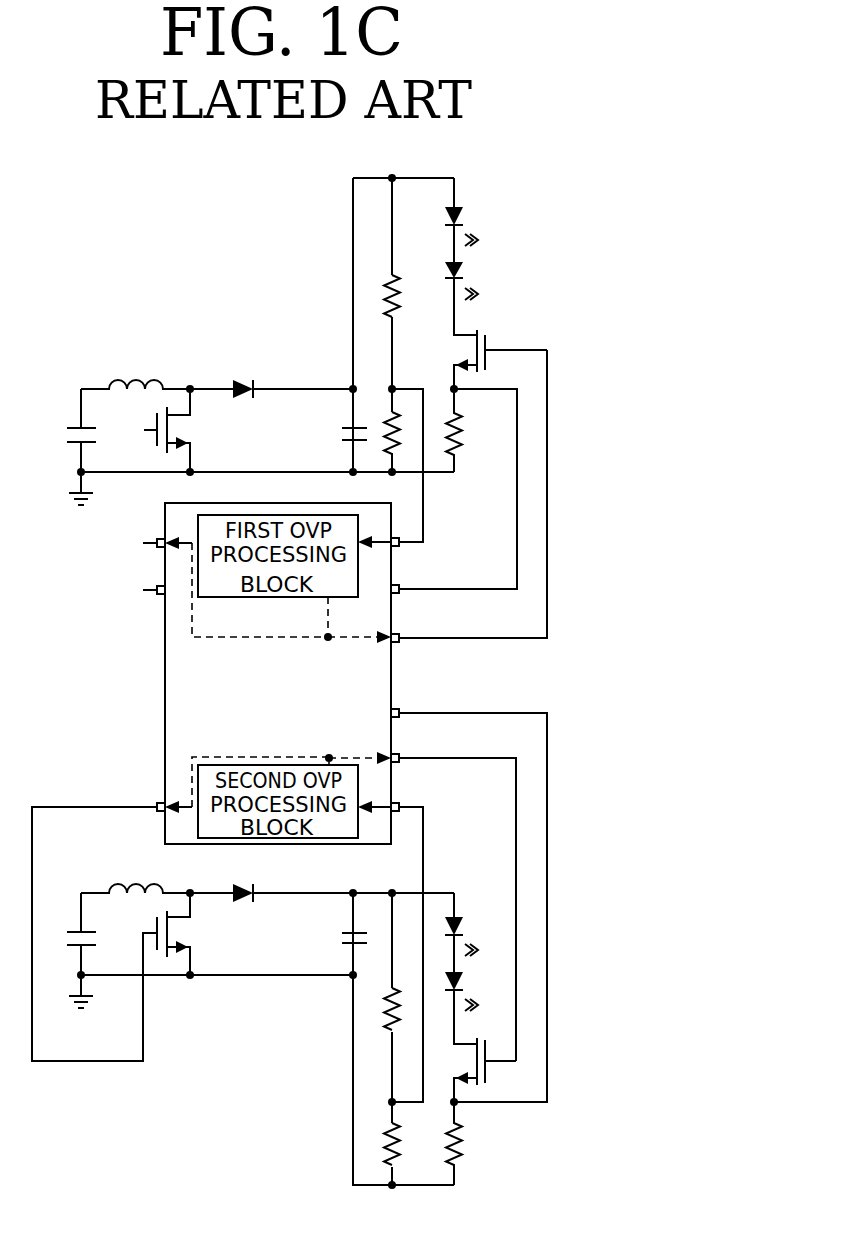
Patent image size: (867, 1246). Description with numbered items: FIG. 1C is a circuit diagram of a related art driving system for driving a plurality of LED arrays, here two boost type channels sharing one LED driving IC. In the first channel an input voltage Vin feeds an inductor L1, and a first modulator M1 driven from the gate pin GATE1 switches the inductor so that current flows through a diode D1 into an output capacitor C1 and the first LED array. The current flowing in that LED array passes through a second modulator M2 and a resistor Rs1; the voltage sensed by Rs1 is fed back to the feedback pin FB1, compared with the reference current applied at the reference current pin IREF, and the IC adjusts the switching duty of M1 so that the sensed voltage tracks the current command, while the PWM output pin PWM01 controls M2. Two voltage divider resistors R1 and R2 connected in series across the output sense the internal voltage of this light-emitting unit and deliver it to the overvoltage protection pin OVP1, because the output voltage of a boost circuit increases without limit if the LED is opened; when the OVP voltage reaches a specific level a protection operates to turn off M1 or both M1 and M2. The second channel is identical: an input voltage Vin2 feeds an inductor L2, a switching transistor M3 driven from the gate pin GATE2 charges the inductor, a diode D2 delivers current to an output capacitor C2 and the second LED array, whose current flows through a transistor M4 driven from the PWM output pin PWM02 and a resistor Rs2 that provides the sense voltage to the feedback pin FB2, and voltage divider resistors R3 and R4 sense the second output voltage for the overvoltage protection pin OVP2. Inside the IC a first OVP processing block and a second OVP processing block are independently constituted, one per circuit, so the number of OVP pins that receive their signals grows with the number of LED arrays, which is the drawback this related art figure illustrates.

The input voltage Vin is at (64, 447).
The inductor L1 is at (135, 369).
The diode D1 is at (271, 374).
The first modulator M1 is at (183, 430).
The output capacitor C1 is at (342, 434).
The voltage divider resistor R1 is at (408, 296).
The voltage divider resistor R2 is at (402, 441).
The resistor Rs1 is at (474, 430).
The second modulator M2 is at (500, 356).
The gate pin GATE1 is at (123, 558).
The reference current pin IREF is at (123, 592).
The overvoltage protection pin OVP1 is at (428, 555).
The feedback pin FB1 is at (419, 604).
The PWM output pin PWM01 is at (440, 654).
The feedback pin FB2 is at (421, 699).
The PWM output pin PWM02 is at (441, 744).
The overvoltage protection pin OVP2 is at (430, 794).
The gate pin GATE2 is at (94, 934).
The input voltage Vin2 is at (68, 950).
The inductor L2 is at (135, 872).
The diode D2 is at (271, 876).
The modulator M3 is at (184, 934).
The output capacitor C2 is at (341, 939).
The voltage divider resistor R3 is at (378, 1009).
The voltage divider resistor R4 is at (378, 1144).
The resistor Rs2 is at (474, 1143).
The modulator M4 is at (488, 1070).